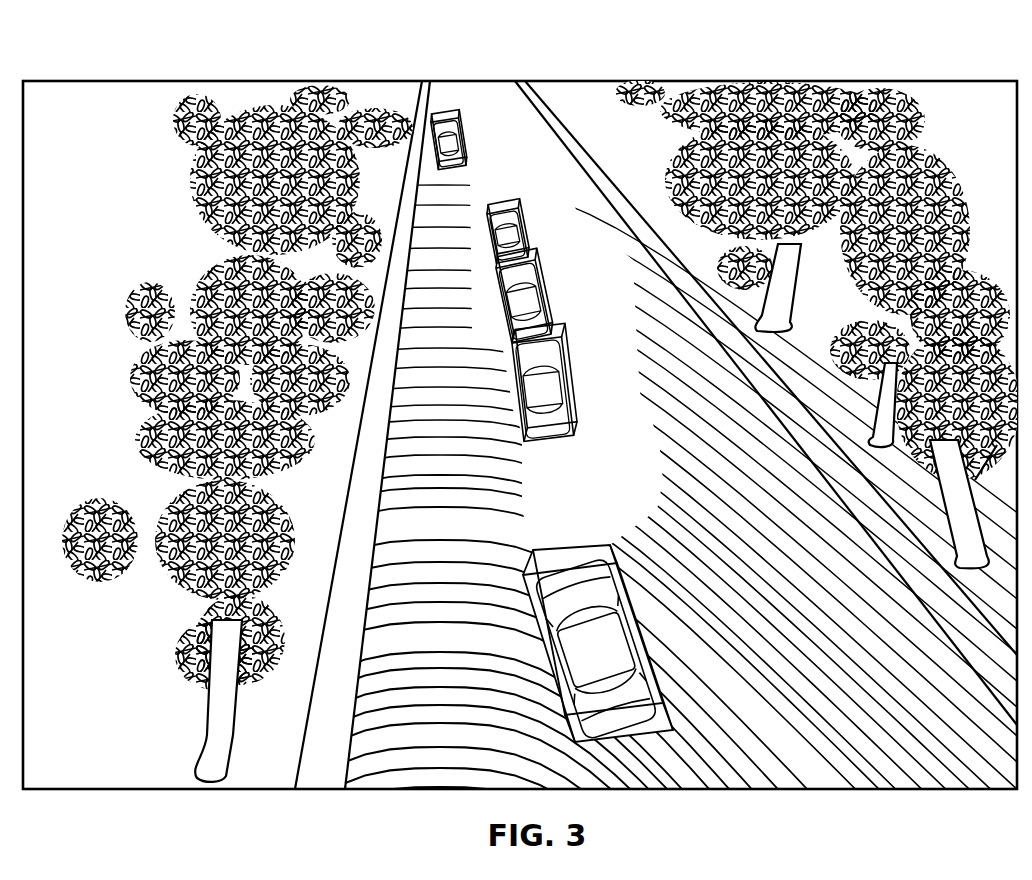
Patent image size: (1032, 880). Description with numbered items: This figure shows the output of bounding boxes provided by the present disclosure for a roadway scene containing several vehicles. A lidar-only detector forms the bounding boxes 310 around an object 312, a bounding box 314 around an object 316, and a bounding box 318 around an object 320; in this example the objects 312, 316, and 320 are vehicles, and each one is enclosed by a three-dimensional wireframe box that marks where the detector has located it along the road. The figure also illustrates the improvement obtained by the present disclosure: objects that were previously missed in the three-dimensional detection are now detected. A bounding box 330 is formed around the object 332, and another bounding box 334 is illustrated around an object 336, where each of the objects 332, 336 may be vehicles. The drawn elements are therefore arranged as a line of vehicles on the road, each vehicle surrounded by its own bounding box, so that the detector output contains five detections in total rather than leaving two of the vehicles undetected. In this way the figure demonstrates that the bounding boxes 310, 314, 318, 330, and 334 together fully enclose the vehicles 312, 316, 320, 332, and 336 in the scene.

The bounding box 310 is at (563, 545).
The object 312 is at (602, 580).
The bounding box 314 is at (533, 438).
The object 316 is at (563, 397).
The bounding box 318 is at (437, 120).
The object 320 is at (450, 122).
The bounding box 330 is at (519, 210).
The object 332 is at (522, 234).
The bounding box 334 is at (552, 306).
The object 336 is at (550, 295).